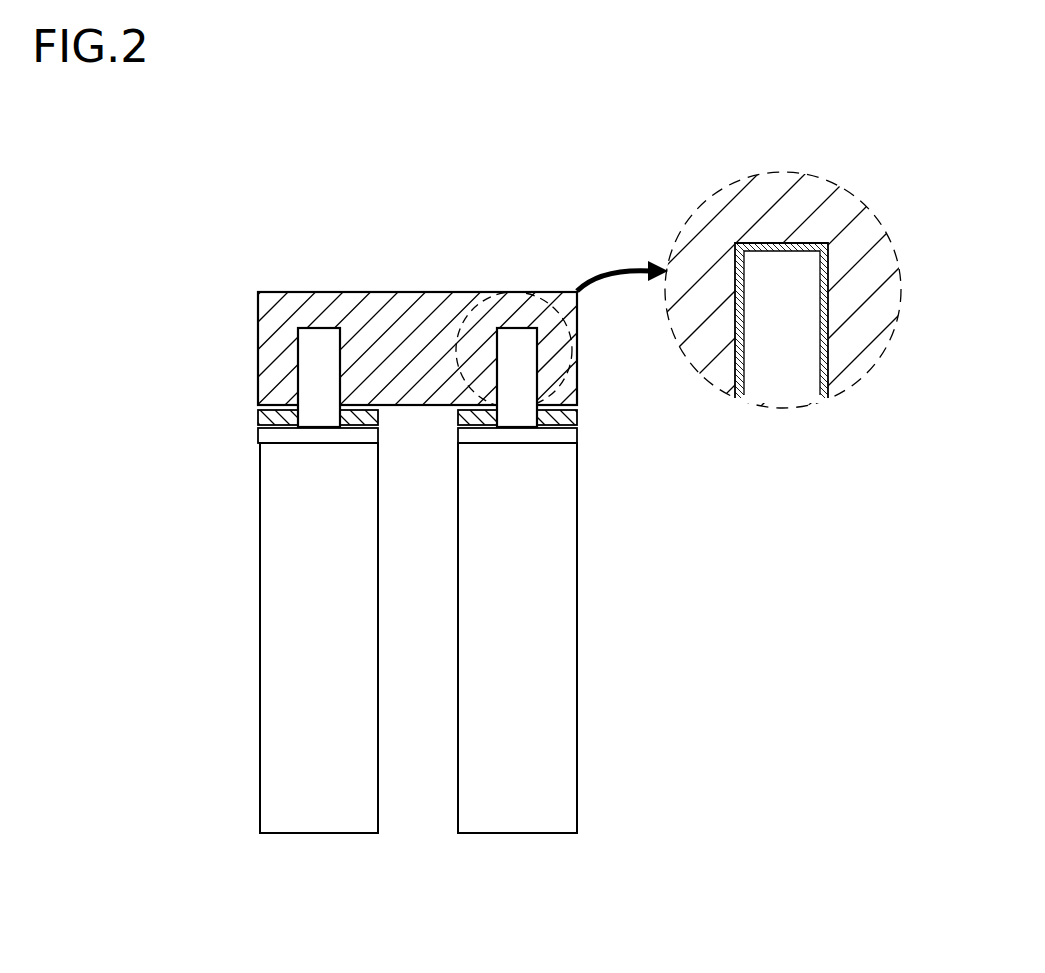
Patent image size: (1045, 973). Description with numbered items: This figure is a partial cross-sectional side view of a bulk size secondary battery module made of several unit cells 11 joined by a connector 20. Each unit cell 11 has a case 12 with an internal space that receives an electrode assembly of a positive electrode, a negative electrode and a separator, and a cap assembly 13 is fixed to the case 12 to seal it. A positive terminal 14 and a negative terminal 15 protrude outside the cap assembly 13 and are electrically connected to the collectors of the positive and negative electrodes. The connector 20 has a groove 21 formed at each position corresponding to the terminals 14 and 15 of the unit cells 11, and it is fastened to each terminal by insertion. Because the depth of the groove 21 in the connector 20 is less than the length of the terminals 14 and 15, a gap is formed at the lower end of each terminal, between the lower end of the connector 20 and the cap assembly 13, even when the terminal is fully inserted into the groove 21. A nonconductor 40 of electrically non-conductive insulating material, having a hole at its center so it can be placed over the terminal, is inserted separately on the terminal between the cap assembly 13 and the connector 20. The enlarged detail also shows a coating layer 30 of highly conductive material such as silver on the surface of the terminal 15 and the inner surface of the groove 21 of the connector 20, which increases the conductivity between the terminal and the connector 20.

The unit cell 11 is at (320, 848).
The case 12 is at (260, 607).
The cap assembly 13 is at (274, 432).
The positive terminal 14 is at (312, 347).
The negative terminal 15 is at (510, 338).
The connector 20 is at (408, 308).
The groove 21 is at (337, 327).
The coating layer 30 is at (736, 372).
The nonconductor 40 is at (262, 417).